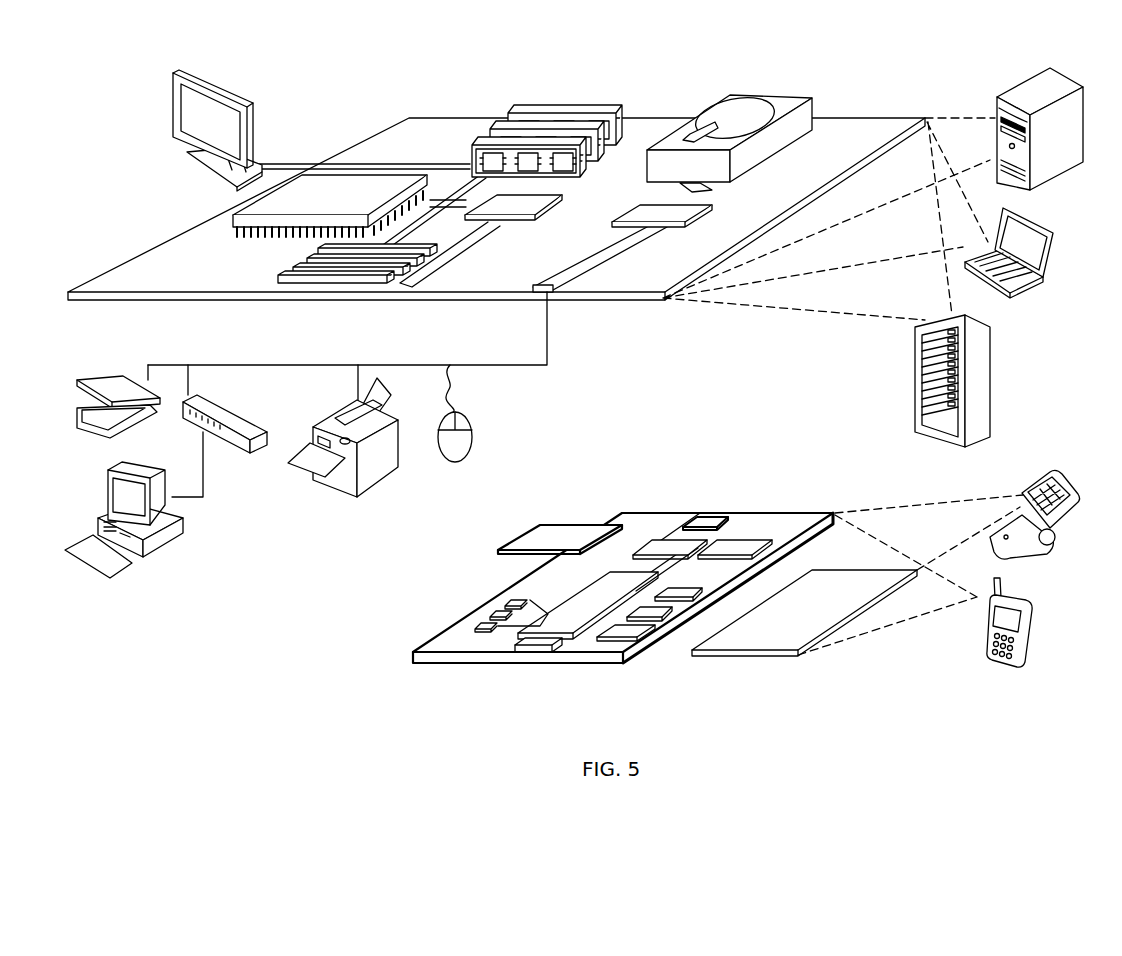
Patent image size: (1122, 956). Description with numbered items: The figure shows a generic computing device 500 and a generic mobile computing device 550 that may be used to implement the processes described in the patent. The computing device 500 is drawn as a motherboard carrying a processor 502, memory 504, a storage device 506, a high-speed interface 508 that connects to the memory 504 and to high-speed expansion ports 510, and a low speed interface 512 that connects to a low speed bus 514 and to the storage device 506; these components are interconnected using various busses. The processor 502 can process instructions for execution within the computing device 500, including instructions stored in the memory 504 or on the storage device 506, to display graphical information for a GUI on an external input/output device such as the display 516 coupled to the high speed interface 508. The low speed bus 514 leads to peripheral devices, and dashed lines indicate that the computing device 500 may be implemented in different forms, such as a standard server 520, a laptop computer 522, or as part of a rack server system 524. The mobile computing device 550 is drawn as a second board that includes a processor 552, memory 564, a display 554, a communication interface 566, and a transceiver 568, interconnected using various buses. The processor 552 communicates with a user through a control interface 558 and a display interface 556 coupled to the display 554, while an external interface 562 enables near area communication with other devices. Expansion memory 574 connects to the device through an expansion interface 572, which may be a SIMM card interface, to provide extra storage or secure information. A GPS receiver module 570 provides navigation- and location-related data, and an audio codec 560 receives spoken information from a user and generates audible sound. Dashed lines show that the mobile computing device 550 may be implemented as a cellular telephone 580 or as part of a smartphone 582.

The computing device 500 is at (345, 92).
The processor 502 is at (233, 218).
The memory 504 is at (520, 113).
The storage device 506 is at (728, 100).
The high-speed interface 508 is at (495, 215).
The high-speed expansion ports 510 is at (290, 270).
The low speed interface 512 is at (647, 207).
The low speed bus 514 is at (560, 292).
The display 516 is at (173, 73).
The standard server 520 is at (997, 107).
The laptop computer 522 is at (1050, 234).
The rack server system 524 is at (916, 401).
The mobile computing device 550 is at (393, 658).
The processor 552 is at (565, 622).
The display 554 is at (770, 640).
The display interface 556 is at (623, 633).
The control interface 558 is at (650, 613).
The audio codec 560 is at (675, 593).
The external interface 562 is at (543, 643).
The memory 564 is at (490, 620).
The communication interface 566 is at (667, 548).
The transceiver 568 is at (736, 542).
The GPS receiver module 570 is at (710, 518).
The expansion interface 572 is at (600, 524).
The expansion memory 574 is at (543, 523).
The cellular telephone 580 is at (1022, 492).
The smartphone 582 is at (990, 600).